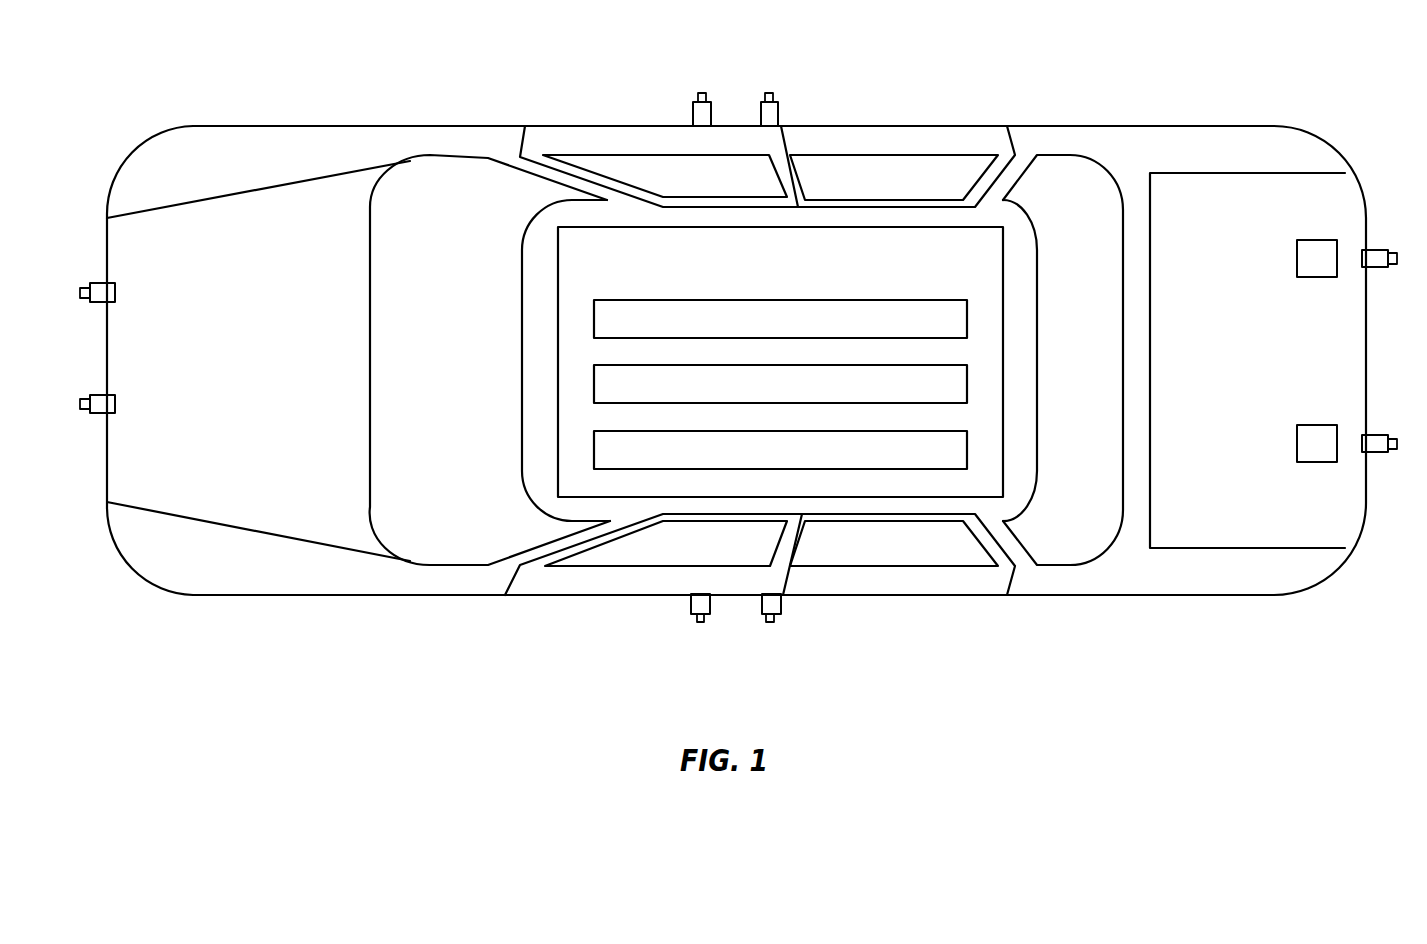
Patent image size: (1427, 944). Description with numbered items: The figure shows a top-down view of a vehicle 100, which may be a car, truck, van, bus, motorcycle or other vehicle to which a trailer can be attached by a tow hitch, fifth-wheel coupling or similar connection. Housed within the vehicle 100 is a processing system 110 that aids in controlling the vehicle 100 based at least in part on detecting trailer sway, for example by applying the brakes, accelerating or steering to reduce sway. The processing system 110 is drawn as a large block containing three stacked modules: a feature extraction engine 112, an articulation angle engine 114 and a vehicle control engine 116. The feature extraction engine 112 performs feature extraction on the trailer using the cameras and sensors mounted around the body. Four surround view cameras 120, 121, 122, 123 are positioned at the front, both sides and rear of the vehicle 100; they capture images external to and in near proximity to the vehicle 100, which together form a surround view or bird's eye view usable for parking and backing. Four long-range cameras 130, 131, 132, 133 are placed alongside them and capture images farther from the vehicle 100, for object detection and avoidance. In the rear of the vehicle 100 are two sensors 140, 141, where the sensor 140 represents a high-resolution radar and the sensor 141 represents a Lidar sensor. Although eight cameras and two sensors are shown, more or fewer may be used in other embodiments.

The vehicle 100 is at (257, 125).
The processing system 110 is at (795, 259).
The feature extraction engine 112 is at (795, 332).
The articulation angle engine 114 is at (795, 397).
The vehicle control engine 116 is at (795, 463).
The camera 120 is at (95, 284).
The camera 121 is at (700, 622).
The camera 122 is at (701, 93).
The camera 123 is at (1372, 268).
The camera 130 is at (95, 396).
The camera 131 is at (770, 622).
The camera 132 is at (768, 93).
The camera 133 is at (1372, 453).
The sensor 140 is at (1307, 240).
The sensor 141 is at (1307, 425).